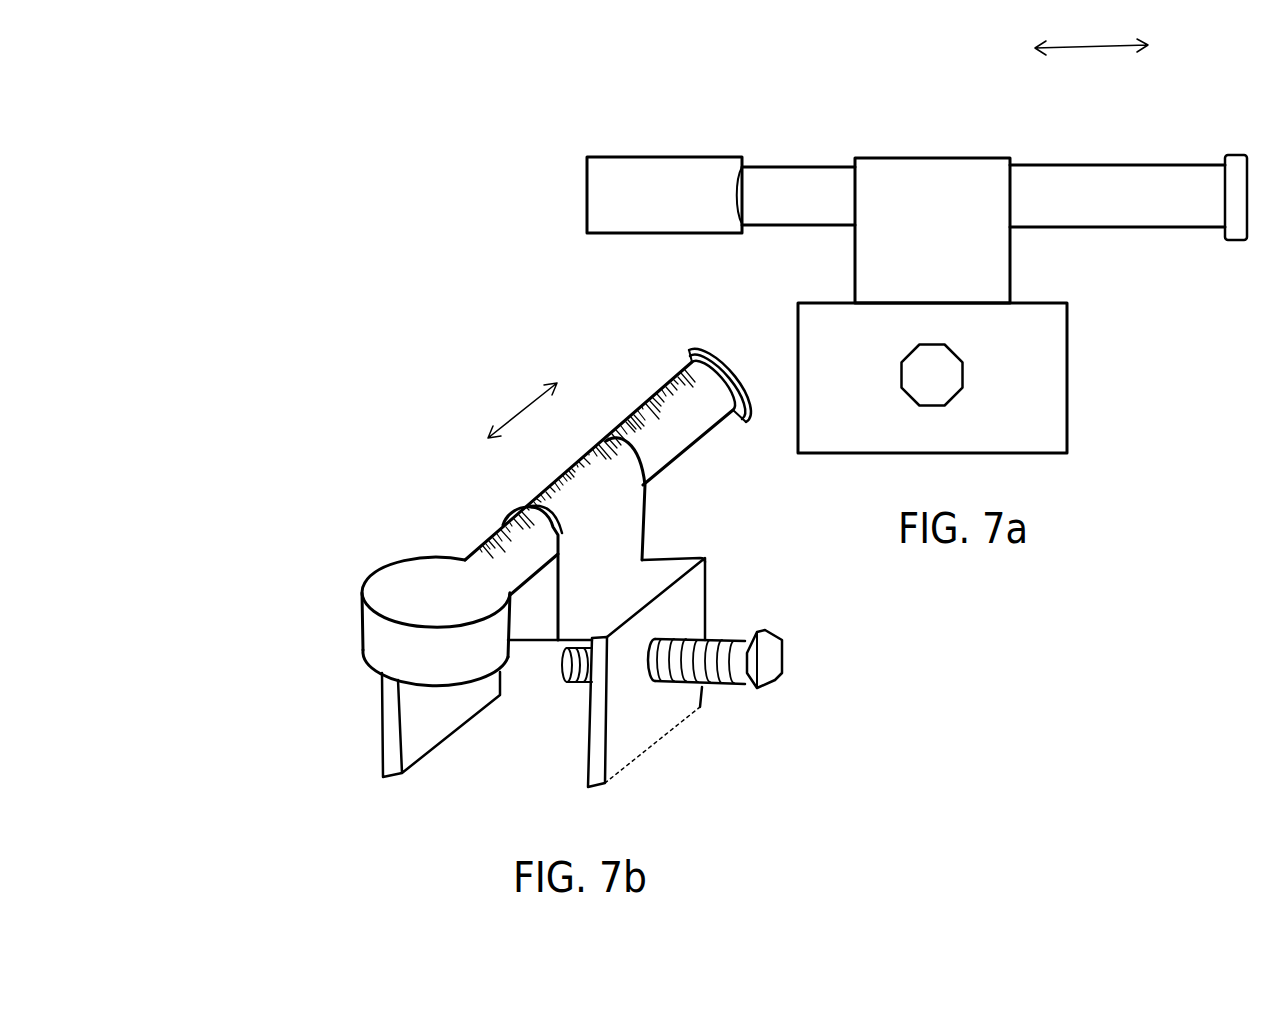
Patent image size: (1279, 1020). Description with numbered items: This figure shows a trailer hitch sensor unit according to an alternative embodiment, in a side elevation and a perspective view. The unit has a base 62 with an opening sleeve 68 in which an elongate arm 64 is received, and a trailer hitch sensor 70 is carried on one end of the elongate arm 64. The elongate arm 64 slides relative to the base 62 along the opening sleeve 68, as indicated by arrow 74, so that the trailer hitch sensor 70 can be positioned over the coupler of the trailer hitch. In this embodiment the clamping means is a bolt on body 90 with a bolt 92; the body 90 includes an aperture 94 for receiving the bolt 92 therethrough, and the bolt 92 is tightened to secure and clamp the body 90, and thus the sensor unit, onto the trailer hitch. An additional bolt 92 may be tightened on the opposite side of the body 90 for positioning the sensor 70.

In FIG. 7B, the base 62 is at (585, 457).
In FIG. 7A, the elongate arm 64 is at (790, 165).
In FIG. 7B, the elongate arm 64 is at (655, 393).
In FIG. 7A, the opening sleeve 68 is at (1013, 187).
In FIG. 7B, the opening sleeve 68 is at (508, 520).
In FIG. 7A, the trailer hitch sensor 70 is at (652, 157).
In FIG. 7B, the trailer hitch sensor 70 is at (395, 563).
In FIG. 7A, the arrow 74 is at (1091, 67).
In FIG. 7B, the arrow 74 is at (519, 407).
In FIG. 7A, the bolt on body 90 is at (1068, 330).
In FIG. 7B, the bolt on body 90 is at (660, 743).
In FIG. 7A, the bolt 92 is at (962, 377).
In FIG. 7B, the bolt 92 is at (782, 658).
In FIG. 7B, the aperture 94 is at (665, 640).